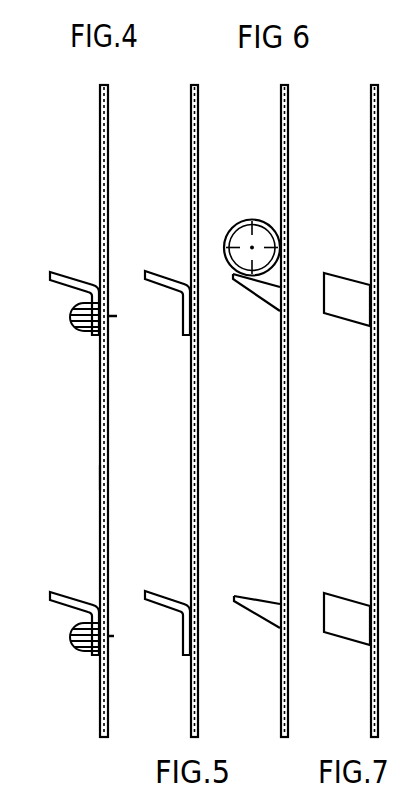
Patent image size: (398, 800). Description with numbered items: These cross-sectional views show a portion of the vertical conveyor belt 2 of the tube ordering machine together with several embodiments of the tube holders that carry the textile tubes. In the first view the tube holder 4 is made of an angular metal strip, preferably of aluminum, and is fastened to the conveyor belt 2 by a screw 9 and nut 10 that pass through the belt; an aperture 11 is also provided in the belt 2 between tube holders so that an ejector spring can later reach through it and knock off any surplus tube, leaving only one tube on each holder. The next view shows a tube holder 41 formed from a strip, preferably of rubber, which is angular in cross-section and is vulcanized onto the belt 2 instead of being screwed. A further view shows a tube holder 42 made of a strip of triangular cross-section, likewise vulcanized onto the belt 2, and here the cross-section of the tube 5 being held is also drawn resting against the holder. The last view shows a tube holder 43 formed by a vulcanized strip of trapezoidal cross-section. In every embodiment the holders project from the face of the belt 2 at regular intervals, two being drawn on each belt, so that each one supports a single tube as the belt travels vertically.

In FIG. 4, the conveyor belt 2 is at (99, 397).
In FIG. 4, the tube holder 4 is at (62, 271).
In FIG. 5, the tube holder 41 is at (160, 272).
In FIG. 6, the tube holder 42 is at (236, 595).
In FIG. 7, the tube holder 43 is at (352, 312).
In FIG. 6, the tube 5 is at (246, 221).
In FIG. 4, the screw 9 is at (118, 650).
In FIG. 4, the nut 10 is at (52, 662).
In FIG. 4, the aperture 11 is at (99, 477).